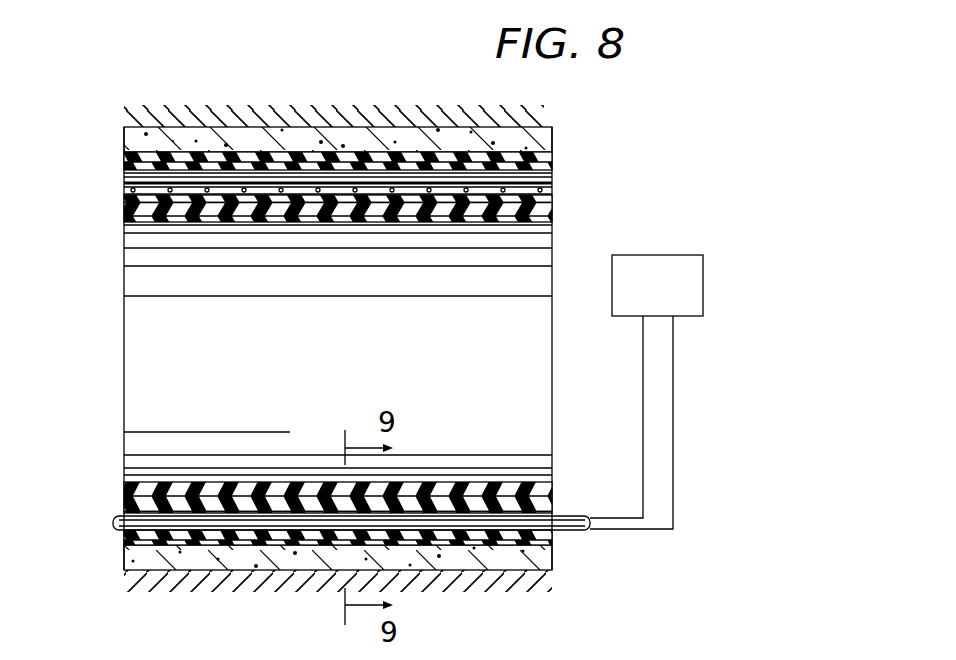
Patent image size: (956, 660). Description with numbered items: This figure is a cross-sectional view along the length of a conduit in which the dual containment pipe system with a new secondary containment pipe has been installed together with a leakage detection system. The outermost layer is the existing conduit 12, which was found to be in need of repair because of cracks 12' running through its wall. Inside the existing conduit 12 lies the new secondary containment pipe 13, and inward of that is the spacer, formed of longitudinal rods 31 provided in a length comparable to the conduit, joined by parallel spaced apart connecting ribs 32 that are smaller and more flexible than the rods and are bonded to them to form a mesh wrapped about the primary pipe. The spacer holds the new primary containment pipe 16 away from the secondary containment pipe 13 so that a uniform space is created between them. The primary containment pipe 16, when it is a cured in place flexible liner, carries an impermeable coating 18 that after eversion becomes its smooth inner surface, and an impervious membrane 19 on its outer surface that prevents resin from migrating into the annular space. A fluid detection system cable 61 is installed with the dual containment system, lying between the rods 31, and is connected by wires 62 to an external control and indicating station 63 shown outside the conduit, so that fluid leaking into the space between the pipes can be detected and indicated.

The existing conduit 12 is at (338, 341).
The cracks 12' is at (338, 348).
The new secondary containment pipe 13 is at (566, 161).
The longitudinal rods 31 is at (124, 182).
The connecting ribs 32 is at (552, 190).
The new primary containment pipe 16 is at (124, 209).
The impermeable coating 18 is at (124, 224).
The impervious membrane 19 is at (553, 220).
The fluid detection system cable 61 is at (112, 519).
The wires 62 is at (673, 446).
The external control and indicating station 63 is at (686, 285).